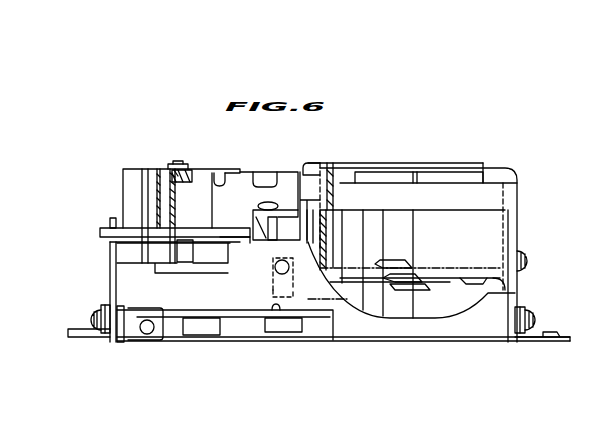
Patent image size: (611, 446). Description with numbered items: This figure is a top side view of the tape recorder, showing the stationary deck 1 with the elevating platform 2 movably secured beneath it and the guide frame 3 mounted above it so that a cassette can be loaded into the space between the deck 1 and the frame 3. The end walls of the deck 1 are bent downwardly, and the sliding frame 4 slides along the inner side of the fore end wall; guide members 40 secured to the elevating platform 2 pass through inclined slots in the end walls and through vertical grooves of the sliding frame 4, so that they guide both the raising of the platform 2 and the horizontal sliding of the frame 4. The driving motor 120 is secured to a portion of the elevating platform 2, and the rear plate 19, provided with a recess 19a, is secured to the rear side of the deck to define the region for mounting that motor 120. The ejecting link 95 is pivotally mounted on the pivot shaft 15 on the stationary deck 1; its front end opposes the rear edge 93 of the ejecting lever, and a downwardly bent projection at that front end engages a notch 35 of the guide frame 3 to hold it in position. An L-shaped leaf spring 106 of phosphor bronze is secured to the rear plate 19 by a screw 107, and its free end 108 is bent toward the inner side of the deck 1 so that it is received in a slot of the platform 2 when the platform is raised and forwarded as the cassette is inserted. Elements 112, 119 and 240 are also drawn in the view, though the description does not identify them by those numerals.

The stationary deck 1 is at (358, 347).
The elevating platform 2 is at (250, 347).
The guide frame 3 is at (489, 158).
The sliding frame 4 is at (123, 348).
The pivot shaft 15 is at (183, 207).
The rear plate 19 is at (472, 328).
The recess 19a is at (412, 328).
The notch 35 is at (261, 173).
The guide members 40 is at (104, 305).
The rear edge 93 is at (144, 195).
The ejecting link 95 is at (122, 186).
The leaf spring 106 is at (273, 276).
The screw 107 is at (276, 264).
The free end 108 is at (271, 297).
The base angle 112 is at (82, 337).
The block 119 is at (193, 257).
The driving motor 120 is at (497, 225).
The bolt 240 is at (88, 312).